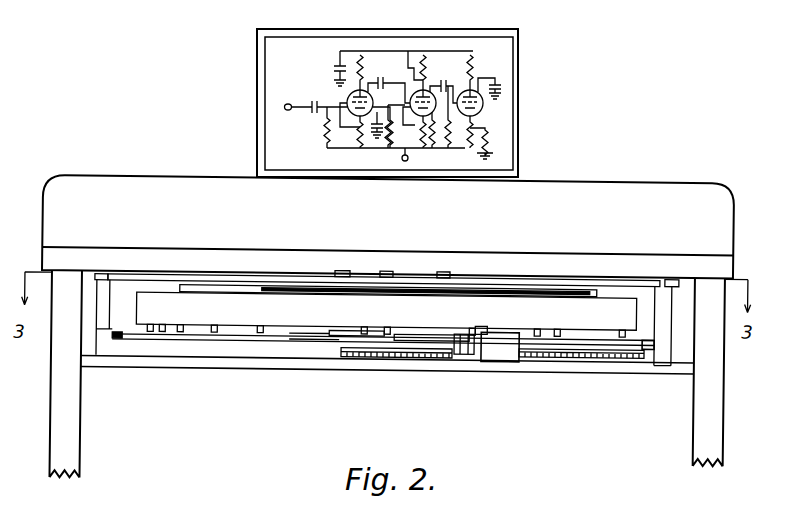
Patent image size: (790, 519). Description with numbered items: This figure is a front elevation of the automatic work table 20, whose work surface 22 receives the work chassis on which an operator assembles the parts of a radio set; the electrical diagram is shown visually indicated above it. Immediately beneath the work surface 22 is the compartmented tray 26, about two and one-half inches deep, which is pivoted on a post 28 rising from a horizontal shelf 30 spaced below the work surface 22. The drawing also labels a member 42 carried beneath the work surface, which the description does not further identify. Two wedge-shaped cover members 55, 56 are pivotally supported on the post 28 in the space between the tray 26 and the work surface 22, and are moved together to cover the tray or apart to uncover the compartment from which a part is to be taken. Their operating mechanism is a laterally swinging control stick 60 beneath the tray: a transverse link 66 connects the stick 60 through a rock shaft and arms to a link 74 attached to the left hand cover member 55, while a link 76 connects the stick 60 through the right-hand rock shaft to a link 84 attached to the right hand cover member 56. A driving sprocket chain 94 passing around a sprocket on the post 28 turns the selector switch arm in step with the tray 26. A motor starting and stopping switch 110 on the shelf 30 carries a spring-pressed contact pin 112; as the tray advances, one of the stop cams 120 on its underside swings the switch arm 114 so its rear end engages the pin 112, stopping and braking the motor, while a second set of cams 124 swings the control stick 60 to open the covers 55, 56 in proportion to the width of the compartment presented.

The work table 20 is at (129, 167).
The work surface 22 is at (60, 243).
The compartmented tray 26 is at (253, 334).
The post 28 is at (390, 268).
The shelf 30 is at (178, 366).
The sliding plate 42 is at (530, 299).
The left hand cover member 55 is at (257, 284).
The right hand cover member 56 is at (565, 289).
The control stick 60 is at (400, 331).
The link 66 is at (300, 339).
The link 74 is at (160, 279).
The link 76 is at (565, 352).
The link 84 is at (448, 277).
The driving sprocket chain 94 is at (355, 354).
The motor starting and stopping switch 110 is at (505, 357).
The contact pin 112 is at (484, 304).
The switch arm 114 is at (458, 350).
The stop cams 120 is at (159, 327).
The cams 124 is at (355, 327).